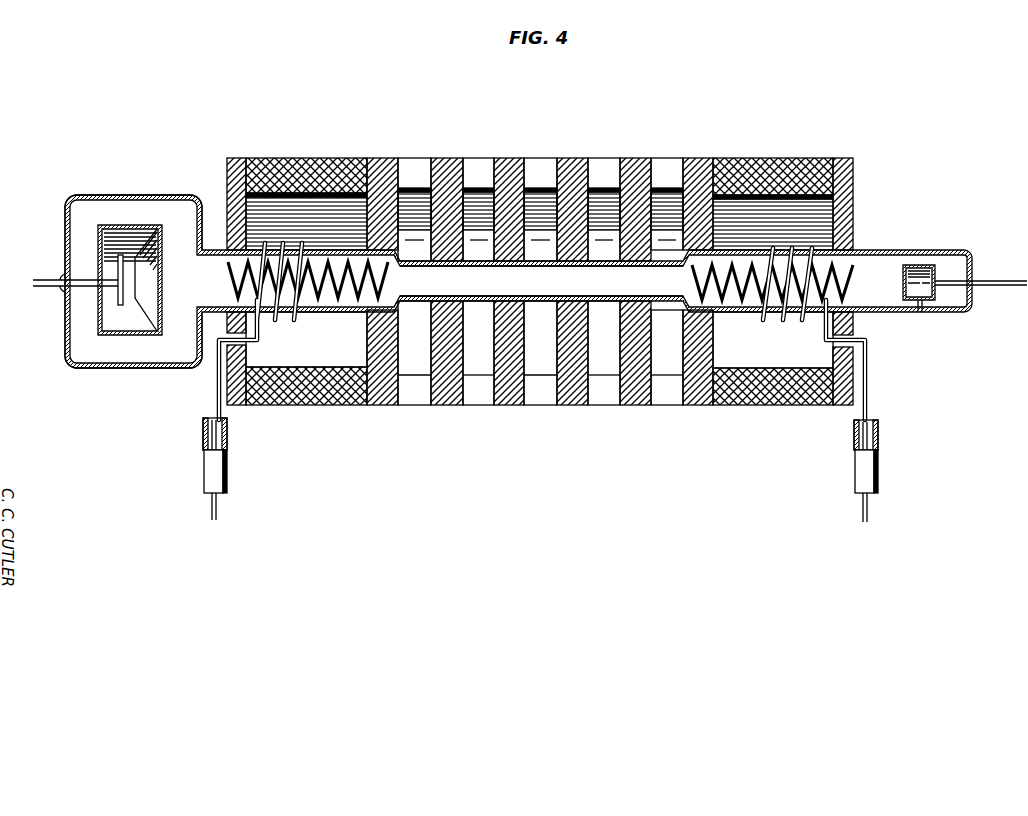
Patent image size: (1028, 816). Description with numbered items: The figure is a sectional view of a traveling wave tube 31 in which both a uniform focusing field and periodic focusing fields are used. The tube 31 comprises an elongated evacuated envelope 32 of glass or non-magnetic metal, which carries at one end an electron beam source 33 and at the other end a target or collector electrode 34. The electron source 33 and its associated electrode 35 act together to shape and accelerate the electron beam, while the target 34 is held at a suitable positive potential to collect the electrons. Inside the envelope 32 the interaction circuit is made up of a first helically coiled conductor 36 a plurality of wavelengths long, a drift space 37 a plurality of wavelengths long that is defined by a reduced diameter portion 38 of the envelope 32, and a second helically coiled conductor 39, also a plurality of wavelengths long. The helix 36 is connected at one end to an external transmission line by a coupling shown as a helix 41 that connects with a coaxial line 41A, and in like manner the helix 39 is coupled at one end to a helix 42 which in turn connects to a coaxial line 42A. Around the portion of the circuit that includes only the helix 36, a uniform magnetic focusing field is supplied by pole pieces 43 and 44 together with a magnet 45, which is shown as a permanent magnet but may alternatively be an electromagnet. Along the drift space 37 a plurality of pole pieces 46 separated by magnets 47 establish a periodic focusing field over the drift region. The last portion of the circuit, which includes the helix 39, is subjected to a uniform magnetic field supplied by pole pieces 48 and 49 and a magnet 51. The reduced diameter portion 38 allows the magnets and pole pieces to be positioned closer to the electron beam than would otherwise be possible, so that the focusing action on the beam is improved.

The traveling wave tube 31 is at (545, 102).
The evacuated envelope 32 is at (925, 252).
The electron beam source 33 is at (117, 227).
The target or collector electrode 34 is at (921, 312).
The electrode 35 is at (118, 337).
The first helically coiled conductor 36 is at (330, 318).
The drift space 37 is at (470, 290).
The reduced diameter portion 38 is at (602, 292).
The second helically coiled conductor 39 is at (724, 312).
The helix 41 is at (276, 320).
The coaxial line 41A is at (228, 457).
The helix 42 is at (782, 320).
The coaxial line 42A is at (878, 442).
The pole piece 43 is at (240, 157).
The pole piece 44 is at (378, 157).
The magnet 45 is at (290, 157).
The pole pieces 46 is at (504, 157).
The magnets 47 is at (418, 406).
The pole piece 48 is at (696, 157).
The pole piece 49 is at (845, 157).
The magnet 51 is at (775, 157).